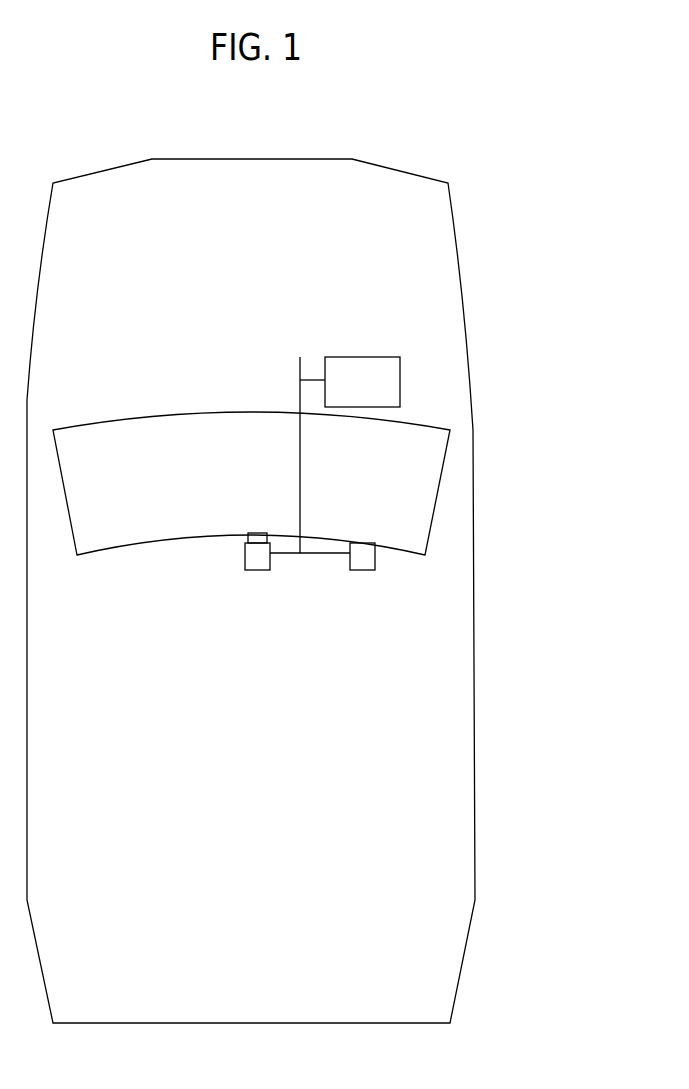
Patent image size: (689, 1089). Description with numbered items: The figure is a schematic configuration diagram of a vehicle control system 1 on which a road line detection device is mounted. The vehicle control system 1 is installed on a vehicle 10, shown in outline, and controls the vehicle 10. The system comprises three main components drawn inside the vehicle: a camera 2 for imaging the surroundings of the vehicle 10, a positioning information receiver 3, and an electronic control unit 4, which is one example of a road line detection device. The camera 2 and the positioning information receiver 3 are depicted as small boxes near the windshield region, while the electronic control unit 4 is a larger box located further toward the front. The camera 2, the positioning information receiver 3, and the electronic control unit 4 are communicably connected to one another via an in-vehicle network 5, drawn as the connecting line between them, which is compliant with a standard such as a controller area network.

The vehicle control system 1 is at (553, 445).
The camera 2 is at (265, 570).
The positioning information receiver 3 is at (375, 564).
The electronic control unit 4 is at (400, 373).
The in-vehicle network 5 is at (302, 480).
The vehicle 10 is at (475, 850).